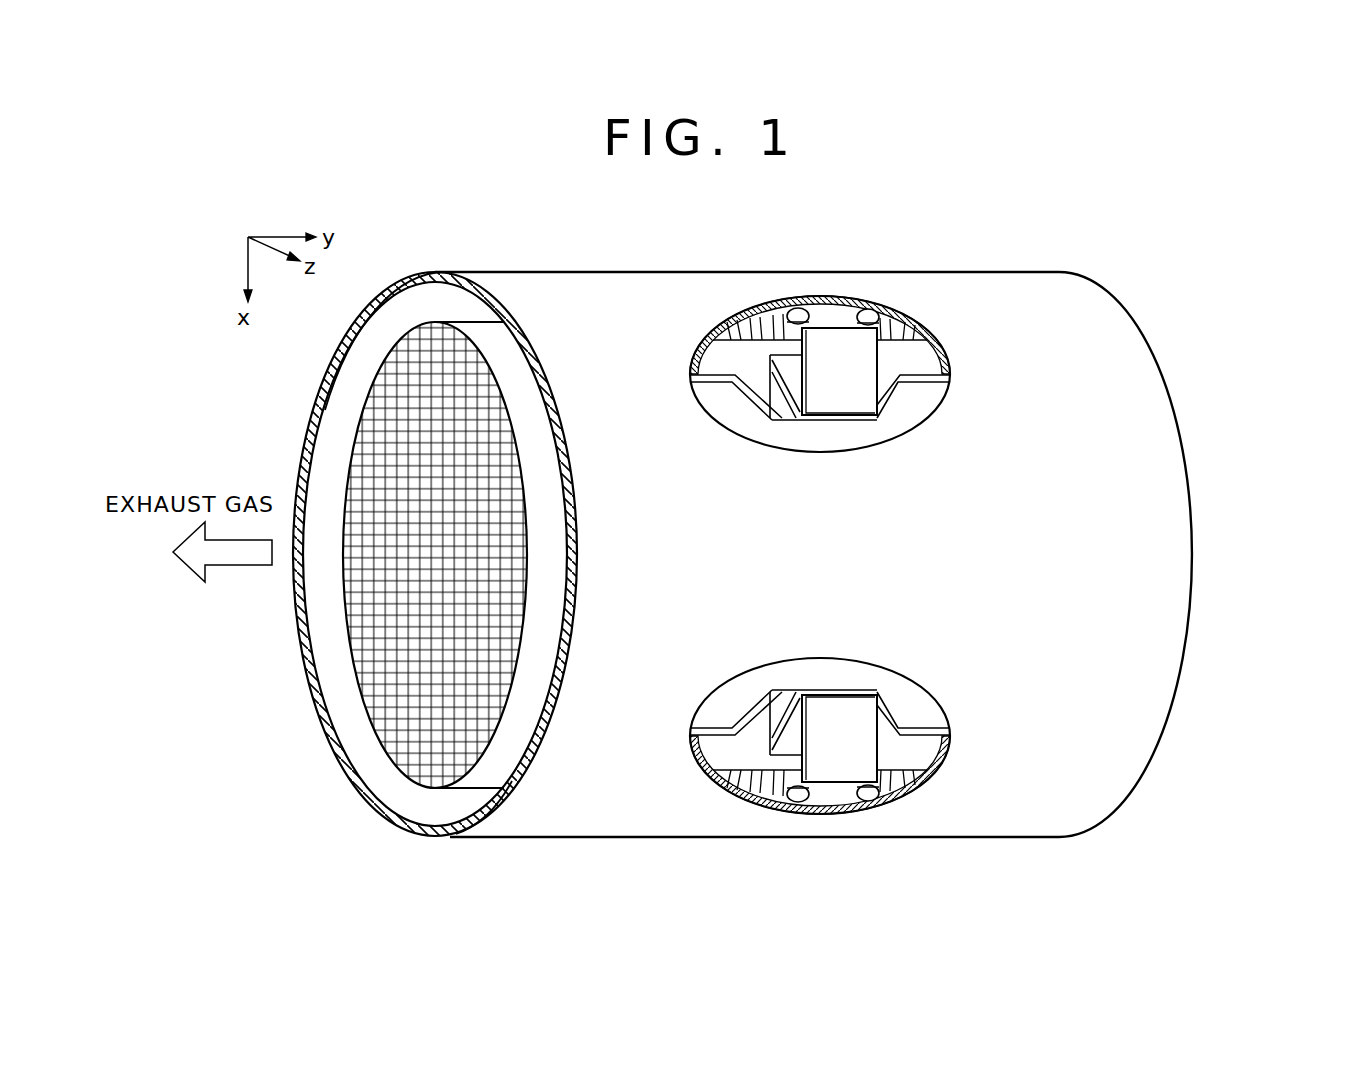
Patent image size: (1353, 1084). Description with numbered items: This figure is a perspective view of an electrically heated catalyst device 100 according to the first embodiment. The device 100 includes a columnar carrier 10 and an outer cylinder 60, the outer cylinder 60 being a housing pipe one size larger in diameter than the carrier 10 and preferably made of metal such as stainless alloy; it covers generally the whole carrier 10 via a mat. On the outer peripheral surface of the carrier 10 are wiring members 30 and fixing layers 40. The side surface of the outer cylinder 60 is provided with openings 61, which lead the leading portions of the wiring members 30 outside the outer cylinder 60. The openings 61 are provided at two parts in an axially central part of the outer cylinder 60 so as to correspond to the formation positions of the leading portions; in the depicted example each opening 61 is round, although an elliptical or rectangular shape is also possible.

The electrically heated catalyst device 100 is at (1197, 278).
The outer cylinder 60 is at (1182, 520).
The opening 61 is at (931, 408).
The carrier 10 is at (447, 559).
The wiring member 30 is at (840, 388).
The fixing layer 40 is at (798, 307).